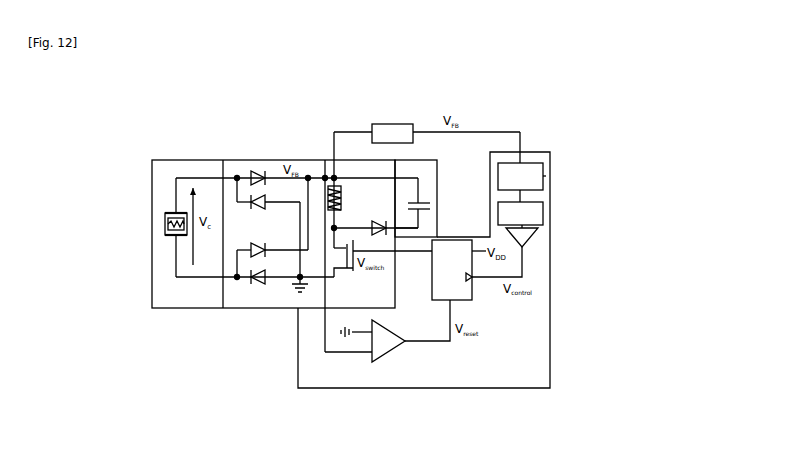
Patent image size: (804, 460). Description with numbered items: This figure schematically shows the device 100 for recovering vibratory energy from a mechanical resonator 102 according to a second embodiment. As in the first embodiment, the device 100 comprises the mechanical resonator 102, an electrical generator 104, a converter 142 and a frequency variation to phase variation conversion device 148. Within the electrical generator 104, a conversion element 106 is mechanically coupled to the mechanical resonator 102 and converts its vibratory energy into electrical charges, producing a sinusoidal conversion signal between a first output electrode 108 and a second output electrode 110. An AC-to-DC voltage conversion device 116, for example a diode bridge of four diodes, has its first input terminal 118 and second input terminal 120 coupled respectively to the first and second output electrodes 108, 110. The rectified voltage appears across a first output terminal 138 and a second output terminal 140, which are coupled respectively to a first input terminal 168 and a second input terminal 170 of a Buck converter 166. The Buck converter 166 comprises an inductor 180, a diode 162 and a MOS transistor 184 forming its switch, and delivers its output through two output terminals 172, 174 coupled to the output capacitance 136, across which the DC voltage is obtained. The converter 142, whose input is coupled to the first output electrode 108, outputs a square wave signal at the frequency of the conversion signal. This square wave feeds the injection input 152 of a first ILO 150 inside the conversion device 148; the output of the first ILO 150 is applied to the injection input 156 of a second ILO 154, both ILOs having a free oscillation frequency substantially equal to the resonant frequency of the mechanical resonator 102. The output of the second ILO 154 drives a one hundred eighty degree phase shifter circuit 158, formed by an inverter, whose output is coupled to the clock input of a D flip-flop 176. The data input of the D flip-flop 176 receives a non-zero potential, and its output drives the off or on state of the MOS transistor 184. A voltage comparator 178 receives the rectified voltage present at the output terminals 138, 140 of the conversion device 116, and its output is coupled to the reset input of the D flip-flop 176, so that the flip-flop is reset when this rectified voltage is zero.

The device for recovering vibratory energy 100 is at (532, 97).
The mechanical resonator 102 is at (130, 227).
The electrical generator 104 is at (152, 176).
The conversion element 106 is at (160, 224).
The first output electrode 108 is at (167, 214).
The second output electrode 110 is at (168, 236).
The AC-to-DC voltage conversion device 116 is at (223, 163).
The first input terminal 118 is at (237, 168).
The second input terminal 120 is at (221, 283).
The output capacitance 136 is at (422, 202).
The first output terminal 138 is at (270, 170).
The second output terminal 140 is at (273, 283).
The converter 142 is at (392, 123).
The frequency variation to phase variation conversion device 148 is at (522, 150).
The first ILO 150 is at (545, 180).
The injection input 152 is at (524, 162).
The second ILO 154 is at (545, 217).
The injection input 156 is at (522, 195).
The 180° phase shifter circuit 158 is at (525, 240).
The diode 162 is at (380, 220).
The Buck converter 166 is at (323, 312).
The first input terminal 168 is at (315, 163).
The second input terminal 170 is at (338, 287).
The output terminal 172 is at (410, 172).
The output terminal 174 is at (404, 230).
The D flip-flop 176 is at (472, 292).
The voltage comparator 178 is at (380, 389).
The inductor 180 is at (342, 189).
The MOS transistor 184 is at (383, 271).